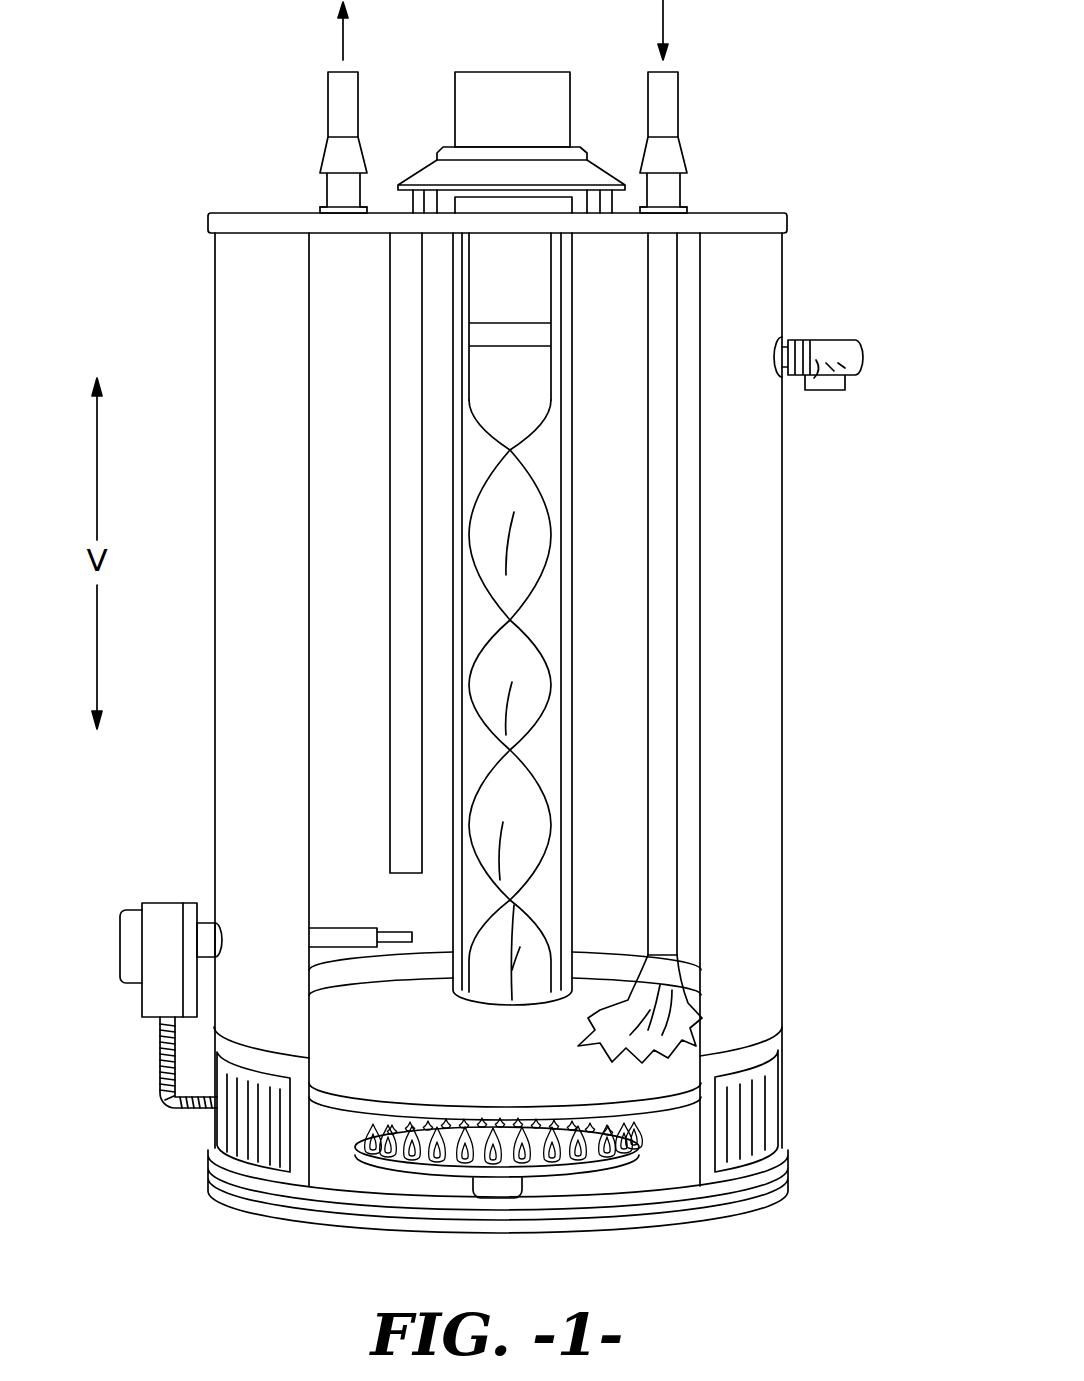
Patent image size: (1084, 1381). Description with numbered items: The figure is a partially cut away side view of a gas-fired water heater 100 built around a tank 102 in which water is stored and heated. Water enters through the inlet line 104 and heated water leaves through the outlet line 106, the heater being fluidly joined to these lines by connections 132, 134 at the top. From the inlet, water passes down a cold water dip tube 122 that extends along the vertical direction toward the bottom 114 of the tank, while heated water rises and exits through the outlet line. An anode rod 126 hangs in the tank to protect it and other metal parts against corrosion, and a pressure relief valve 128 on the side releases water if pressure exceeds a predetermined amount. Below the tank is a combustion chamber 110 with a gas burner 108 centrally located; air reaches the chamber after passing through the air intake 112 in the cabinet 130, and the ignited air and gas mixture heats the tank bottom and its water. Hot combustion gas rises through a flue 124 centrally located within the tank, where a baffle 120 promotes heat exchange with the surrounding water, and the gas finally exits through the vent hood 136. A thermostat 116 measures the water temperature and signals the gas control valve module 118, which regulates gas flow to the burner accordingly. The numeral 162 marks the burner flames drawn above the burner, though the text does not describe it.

The water heater 100 is at (194, 115).
The tank 102 is at (613, 283).
The inlet line 104 is at (668, 100).
The outlet line 106 is at (337, 100).
The gas burner 108 is at (595, 1170).
The combustion chamber 110 is at (662, 1148).
The air intake 112 is at (237, 1117).
The bottom 114 is at (513, 1067).
The thermostat 116 is at (392, 940).
The gas control valve module 118 is at (168, 903).
The baffle 120 is at (527, 513).
The cold water dip tube 122 is at (660, 670).
The flue 124 is at (572, 430).
The anode rod 126 is at (405, 487).
The pressure relief valve 128 is at (843, 348).
The cabinet 130 is at (757, 815).
The connection 132 is at (322, 208).
The connection 134 is at (685, 208).
The vent hood 136 is at (505, 85).
The flame 162 is at (437, 1153).